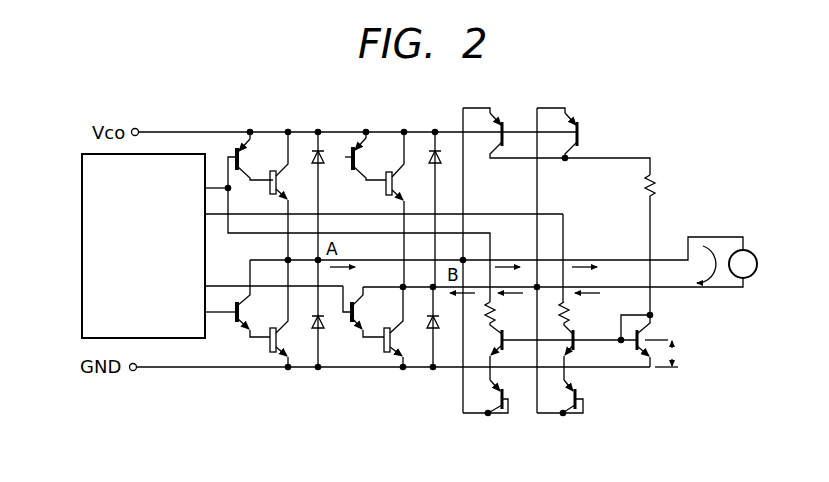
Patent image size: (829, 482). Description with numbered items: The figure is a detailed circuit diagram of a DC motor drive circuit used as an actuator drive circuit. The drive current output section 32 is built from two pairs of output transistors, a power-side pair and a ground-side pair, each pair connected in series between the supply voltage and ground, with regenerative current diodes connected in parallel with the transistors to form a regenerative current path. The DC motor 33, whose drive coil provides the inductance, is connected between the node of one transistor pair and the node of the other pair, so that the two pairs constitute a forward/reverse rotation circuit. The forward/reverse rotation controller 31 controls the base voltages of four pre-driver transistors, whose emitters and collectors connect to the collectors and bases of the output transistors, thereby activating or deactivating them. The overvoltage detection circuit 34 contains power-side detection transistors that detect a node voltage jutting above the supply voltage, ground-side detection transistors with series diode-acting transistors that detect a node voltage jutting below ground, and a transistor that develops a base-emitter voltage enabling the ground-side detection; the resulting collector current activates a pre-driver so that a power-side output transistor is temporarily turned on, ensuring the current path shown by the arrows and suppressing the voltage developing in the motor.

The forward/reverse rotation controller 31 is at (82, 186).
The drive current output section 32 is at (435, 380).
The DC motor 33 is at (757, 257).
The overvoltage detection circuit 34 is at (590, 420).